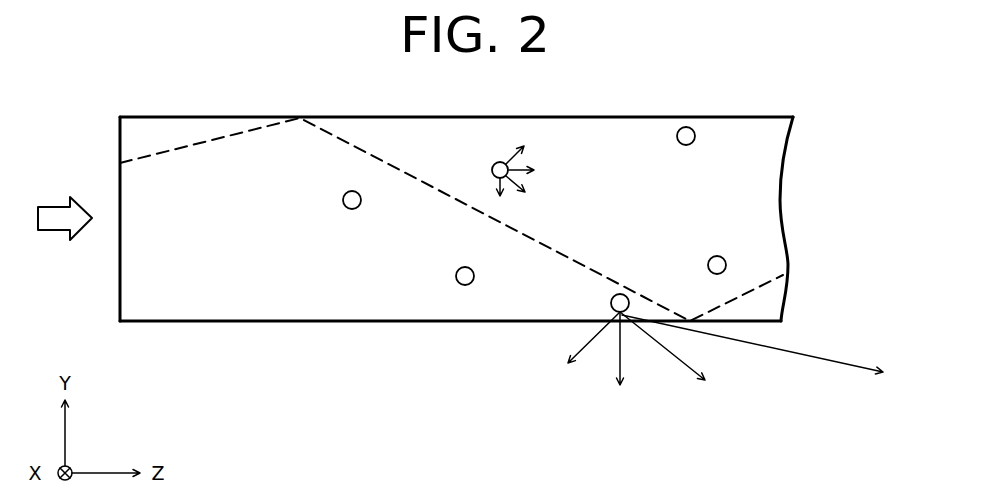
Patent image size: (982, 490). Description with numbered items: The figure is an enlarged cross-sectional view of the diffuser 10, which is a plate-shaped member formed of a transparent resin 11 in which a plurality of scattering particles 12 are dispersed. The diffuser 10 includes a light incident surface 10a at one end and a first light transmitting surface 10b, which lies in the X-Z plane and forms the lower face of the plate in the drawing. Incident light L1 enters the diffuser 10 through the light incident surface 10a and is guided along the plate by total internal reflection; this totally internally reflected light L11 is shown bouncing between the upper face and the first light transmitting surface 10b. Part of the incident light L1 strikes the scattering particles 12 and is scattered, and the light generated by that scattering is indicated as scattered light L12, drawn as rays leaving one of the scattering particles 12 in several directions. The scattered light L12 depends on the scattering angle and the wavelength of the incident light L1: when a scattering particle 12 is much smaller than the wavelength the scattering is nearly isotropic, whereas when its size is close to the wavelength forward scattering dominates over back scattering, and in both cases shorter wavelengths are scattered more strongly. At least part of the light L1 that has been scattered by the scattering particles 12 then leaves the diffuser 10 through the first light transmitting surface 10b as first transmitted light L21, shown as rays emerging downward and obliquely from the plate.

The diffuser 10 is at (772, 218).
The light incident surface 10a is at (118, 305).
The first light transmitting surface 10b is at (397, 322).
The transparent resin 11 is at (612, 126).
The scattering particles 12 is at (687, 127).
The incident light L1 is at (55, 205).
The totally internally reflected light L11 is at (428, 182).
The scattered light L12 is at (501, 161).
The first transmitted light L21 is at (590, 347).